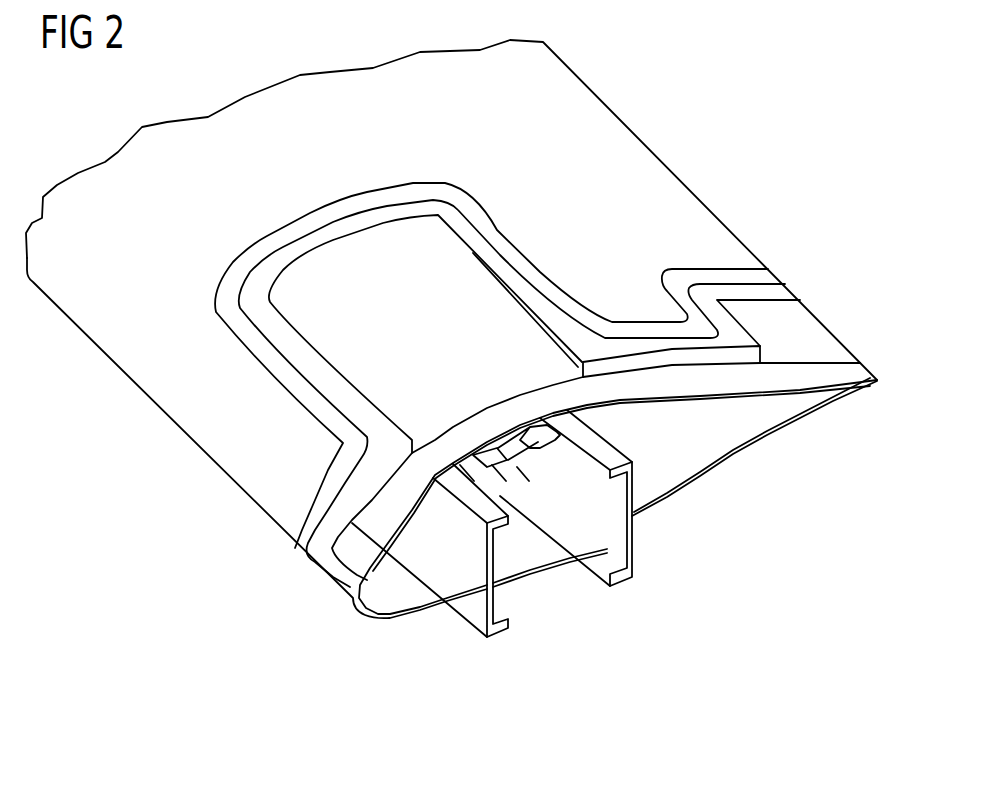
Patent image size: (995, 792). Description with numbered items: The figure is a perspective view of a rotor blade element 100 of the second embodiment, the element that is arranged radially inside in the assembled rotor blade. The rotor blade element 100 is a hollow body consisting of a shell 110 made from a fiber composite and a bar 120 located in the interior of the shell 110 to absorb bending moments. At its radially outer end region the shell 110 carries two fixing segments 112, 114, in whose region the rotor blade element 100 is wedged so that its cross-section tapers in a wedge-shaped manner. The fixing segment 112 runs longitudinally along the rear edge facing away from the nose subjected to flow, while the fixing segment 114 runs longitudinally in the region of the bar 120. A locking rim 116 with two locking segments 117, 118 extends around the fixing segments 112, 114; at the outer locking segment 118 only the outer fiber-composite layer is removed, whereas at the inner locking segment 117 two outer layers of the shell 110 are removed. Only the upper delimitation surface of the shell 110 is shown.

The rotor blade element 100 is at (217, 530).
The shell 110 is at (732, 369).
The fixing segment 112 is at (793, 330).
The fixing segment 114 is at (390, 258).
The locking rim 116 is at (637, 343).
The inner locking segment 117 is at (777, 292).
The outer locking segment 118 is at (710, 272).
The bar 120 is at (606, 597).